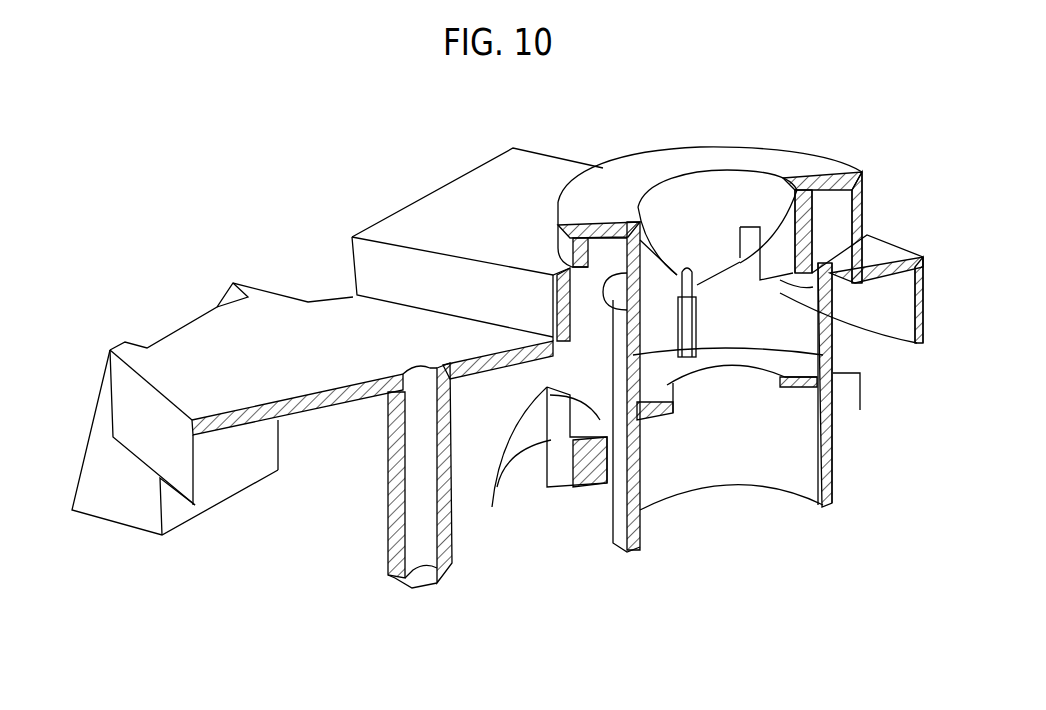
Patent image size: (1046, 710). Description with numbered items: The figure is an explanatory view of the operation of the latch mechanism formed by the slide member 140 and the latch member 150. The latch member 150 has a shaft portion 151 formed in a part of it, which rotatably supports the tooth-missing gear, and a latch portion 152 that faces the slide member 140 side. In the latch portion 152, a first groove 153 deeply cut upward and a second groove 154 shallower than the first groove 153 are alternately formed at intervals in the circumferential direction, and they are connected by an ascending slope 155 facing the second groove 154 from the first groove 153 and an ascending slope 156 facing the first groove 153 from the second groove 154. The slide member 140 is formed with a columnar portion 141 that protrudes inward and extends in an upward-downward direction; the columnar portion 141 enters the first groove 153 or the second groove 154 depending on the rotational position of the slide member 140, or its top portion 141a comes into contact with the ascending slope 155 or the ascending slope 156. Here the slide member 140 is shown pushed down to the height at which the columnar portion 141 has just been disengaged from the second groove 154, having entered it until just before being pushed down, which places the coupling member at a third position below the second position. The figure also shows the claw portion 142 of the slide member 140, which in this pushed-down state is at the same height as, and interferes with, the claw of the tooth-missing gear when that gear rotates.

The latch member 150 is at (786, 124).
The shaft portion 151 is at (392, 513).
The latch portion 152 is at (815, 303).
The first groove 153 is at (727, 257).
The second groove 154 is at (668, 273).
The ascending slope 155 is at (640, 238).
The ascending slope 156 is at (707, 267).
The slide member 140 is at (866, 476).
The columnar portion 141 is at (690, 325).
The top portion 141a is at (737, 283).
The claw portion 142 is at (544, 464).